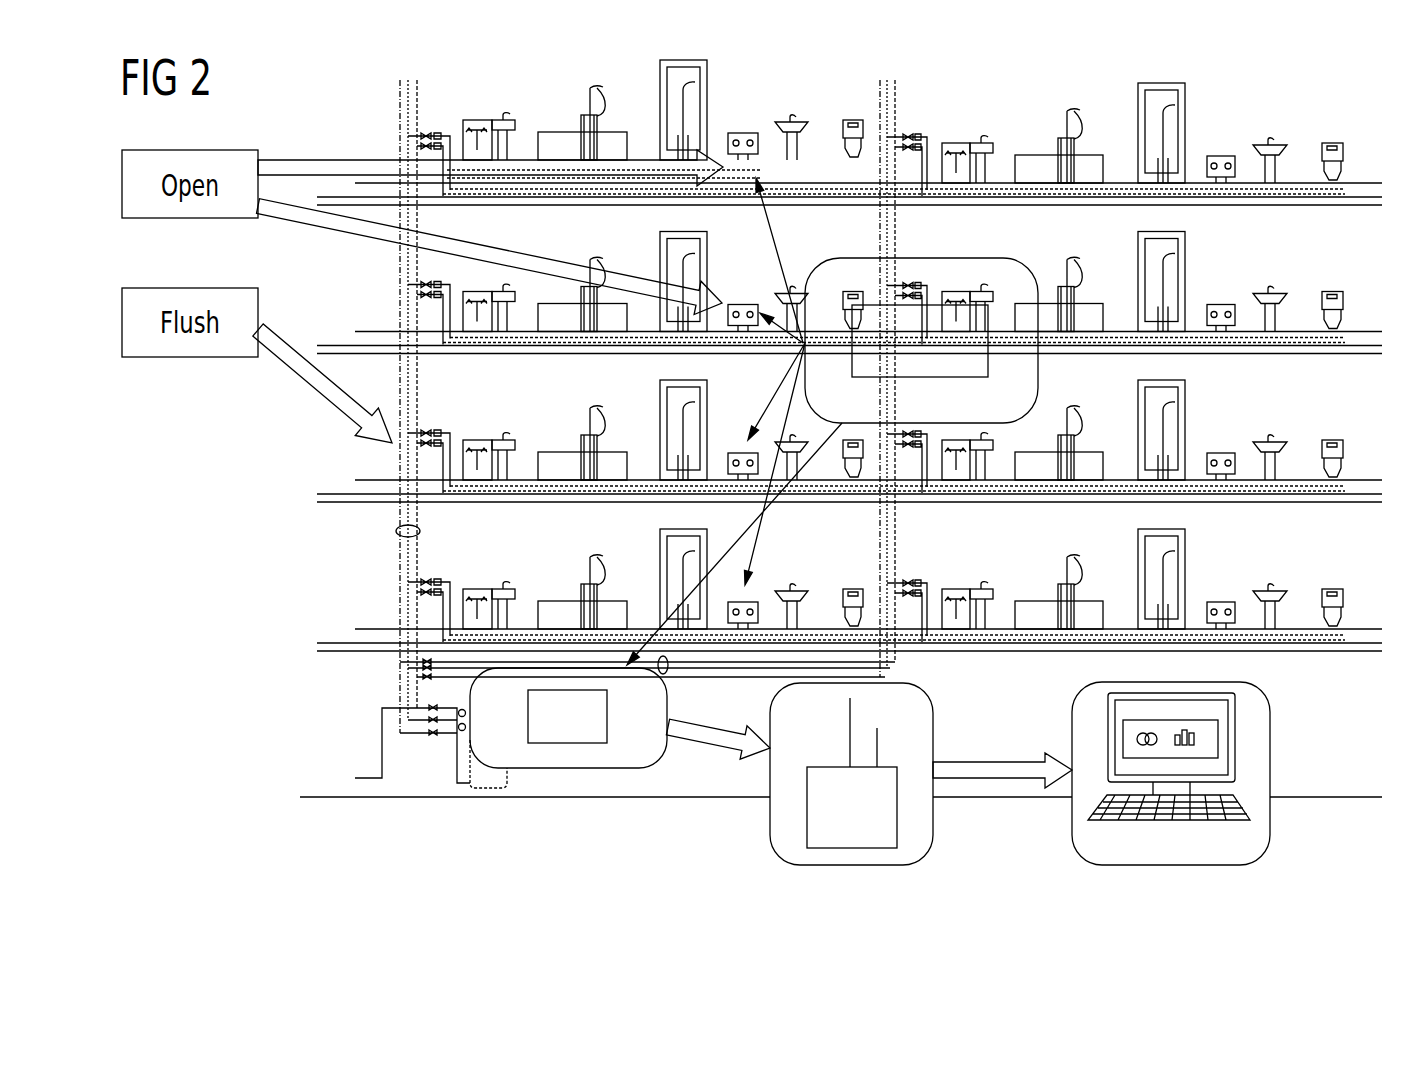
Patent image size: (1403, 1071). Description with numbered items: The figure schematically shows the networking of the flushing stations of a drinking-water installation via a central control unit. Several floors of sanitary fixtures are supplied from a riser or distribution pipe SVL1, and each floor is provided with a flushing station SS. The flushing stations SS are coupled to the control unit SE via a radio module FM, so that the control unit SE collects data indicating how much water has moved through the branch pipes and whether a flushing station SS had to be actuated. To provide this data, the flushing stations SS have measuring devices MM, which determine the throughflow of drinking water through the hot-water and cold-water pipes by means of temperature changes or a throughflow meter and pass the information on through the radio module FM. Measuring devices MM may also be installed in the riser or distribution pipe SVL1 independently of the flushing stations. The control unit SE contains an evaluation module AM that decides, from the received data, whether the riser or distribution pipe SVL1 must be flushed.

The riser or distribution pipe SVL1 is at (400, 553).
The flushing station SS is at (921, 340).
The measuring device MM is at (569, 712).
The radio module FM is at (828, 777).
The control unit SE is at (1174, 773).
The evaluation module AM is at (1212, 740).